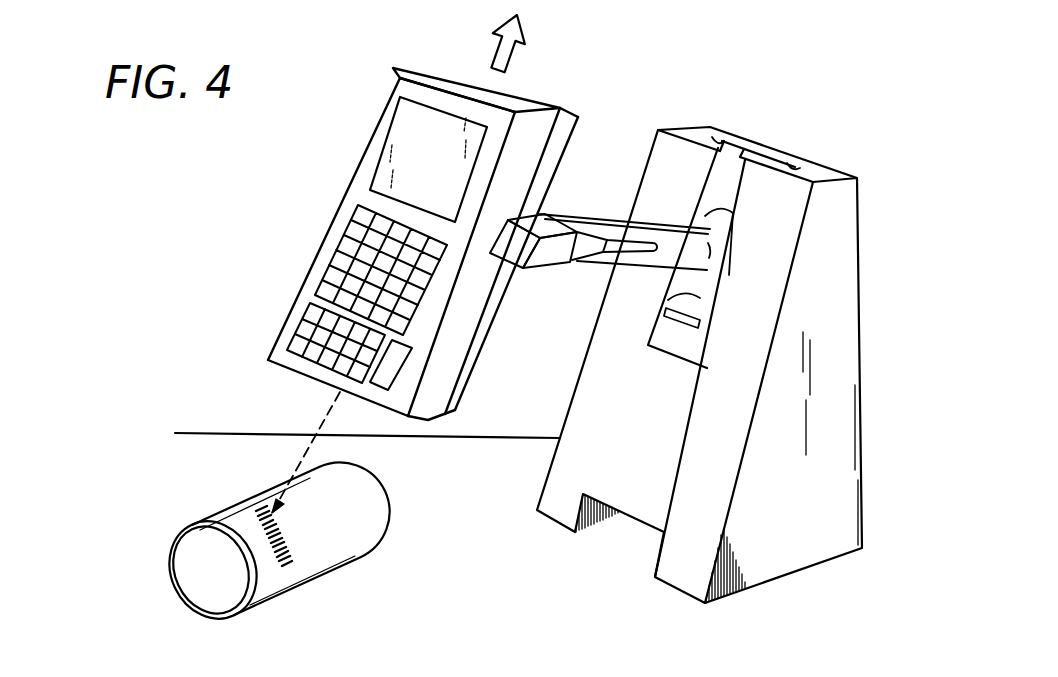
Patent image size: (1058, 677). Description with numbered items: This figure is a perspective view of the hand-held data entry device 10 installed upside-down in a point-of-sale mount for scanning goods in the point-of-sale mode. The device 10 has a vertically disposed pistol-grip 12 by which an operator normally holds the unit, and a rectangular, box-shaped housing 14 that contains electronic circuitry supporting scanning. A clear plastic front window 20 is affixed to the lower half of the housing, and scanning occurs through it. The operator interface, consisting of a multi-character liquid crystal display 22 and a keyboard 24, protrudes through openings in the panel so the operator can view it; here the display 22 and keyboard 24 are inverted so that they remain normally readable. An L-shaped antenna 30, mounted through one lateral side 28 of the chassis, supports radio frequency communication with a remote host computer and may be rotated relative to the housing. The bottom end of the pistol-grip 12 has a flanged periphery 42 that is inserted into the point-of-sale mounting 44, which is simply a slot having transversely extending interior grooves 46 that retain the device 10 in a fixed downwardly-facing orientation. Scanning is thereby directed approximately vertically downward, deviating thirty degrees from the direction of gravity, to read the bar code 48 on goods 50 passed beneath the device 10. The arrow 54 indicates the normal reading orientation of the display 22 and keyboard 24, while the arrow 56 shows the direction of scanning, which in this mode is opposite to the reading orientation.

The device 10 is at (328, 186).
The pistol-grip 12 is at (583, 207).
The housing 14 is at (560, 107).
The front window 20 is at (290, 377).
The display 22 is at (447, 165).
The keyboard 24 is at (328, 268).
The lateral side 28 is at (470, 353).
The antenna 30 is at (528, 272).
The flanged periphery 42 is at (727, 268).
The point-of-sale mounting 44 is at (768, 130).
The interior grooves 46 is at (708, 128).
The bar code 48 is at (283, 563).
The goods 50 is at (392, 493).
The arrow 54 is at (488, 60).
The arrow 56 is at (303, 453).